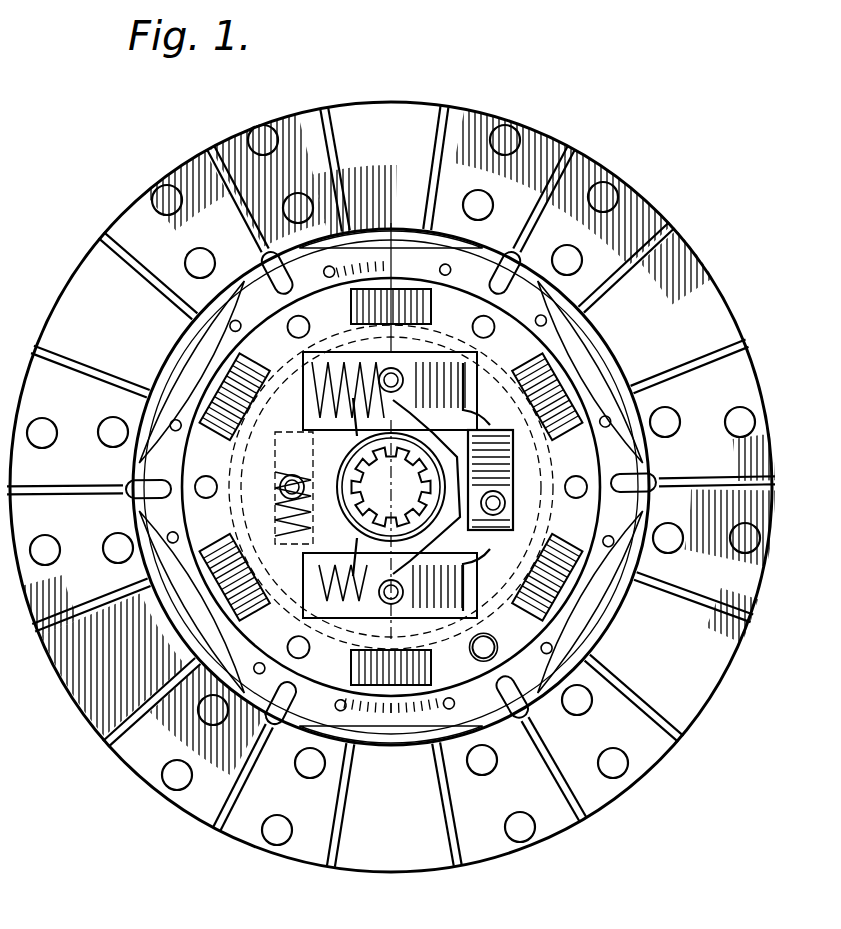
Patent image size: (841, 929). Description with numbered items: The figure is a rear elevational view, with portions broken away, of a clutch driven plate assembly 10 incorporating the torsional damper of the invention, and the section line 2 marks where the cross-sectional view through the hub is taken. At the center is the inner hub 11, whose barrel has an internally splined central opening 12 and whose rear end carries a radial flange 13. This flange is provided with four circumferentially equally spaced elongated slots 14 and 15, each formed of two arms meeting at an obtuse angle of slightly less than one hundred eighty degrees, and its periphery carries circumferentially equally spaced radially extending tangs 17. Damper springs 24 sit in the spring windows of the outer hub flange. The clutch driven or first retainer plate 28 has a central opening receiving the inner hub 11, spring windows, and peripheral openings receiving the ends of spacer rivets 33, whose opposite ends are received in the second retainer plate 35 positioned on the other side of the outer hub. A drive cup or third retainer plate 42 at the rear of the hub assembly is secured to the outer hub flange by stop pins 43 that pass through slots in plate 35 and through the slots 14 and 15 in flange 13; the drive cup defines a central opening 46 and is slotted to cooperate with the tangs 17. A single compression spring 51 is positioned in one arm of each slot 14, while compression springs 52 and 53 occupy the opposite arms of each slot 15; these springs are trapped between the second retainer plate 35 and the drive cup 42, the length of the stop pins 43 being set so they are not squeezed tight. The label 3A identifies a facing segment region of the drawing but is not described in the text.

The clutch driven plate assembly 10 is at (648, 167).
The section line 2- 2 is at (462, 248).
The friction facing segment 3A is at (416, 817).
The inner hub 11 is at (364, 532).
The internally splined central opening 12 is at (348, 450).
The radial flange 13 is at (219, 480).
The elongated slot 14 is at (314, 396).
The elongated slot 15 is at (430, 355).
The tangs 17 is at (448, 242).
The damper springs 24 is at (276, 347).
The first retainer plate 28 is at (140, 506).
The spacer rivets 33 is at (465, 712).
The second retainer plate 35 is at (327, 668).
The drive cup 42 is at (296, 650).
The stop pins 43 is at (400, 537).
The central opening 46 is at (392, 444).
The compression spring 51 is at (535, 440).
The compression spring 52 is at (470, 376).
The compression spring 53 is at (342, 342).